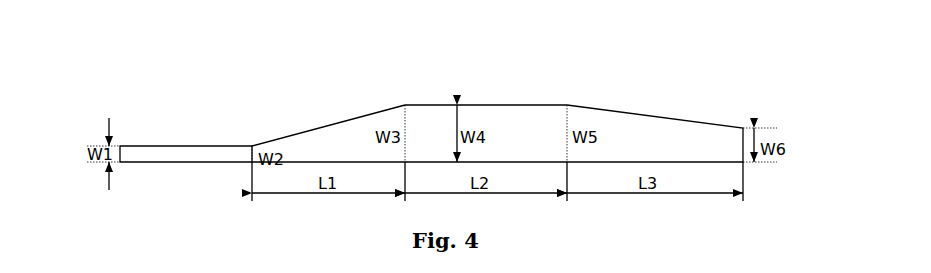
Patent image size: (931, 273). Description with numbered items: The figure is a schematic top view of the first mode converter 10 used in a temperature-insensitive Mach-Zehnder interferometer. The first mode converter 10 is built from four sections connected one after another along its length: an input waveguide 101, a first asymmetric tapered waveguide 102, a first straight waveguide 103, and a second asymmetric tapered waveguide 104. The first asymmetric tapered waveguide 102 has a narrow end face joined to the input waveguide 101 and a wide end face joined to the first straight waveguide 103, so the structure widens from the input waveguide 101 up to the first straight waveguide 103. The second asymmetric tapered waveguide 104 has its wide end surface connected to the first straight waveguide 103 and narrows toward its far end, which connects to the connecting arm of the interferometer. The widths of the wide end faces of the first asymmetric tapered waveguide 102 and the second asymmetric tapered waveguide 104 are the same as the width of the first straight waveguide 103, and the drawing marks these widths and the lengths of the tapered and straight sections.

The first mode converter 10 is at (200, 17).
The input waveguide 101 is at (170, 152).
The first asymmetric tapered waveguide 102 is at (325, 152).
The first straight waveguide 103 is at (518, 135).
The second asymmetric tapered waveguide 104 is at (650, 135).